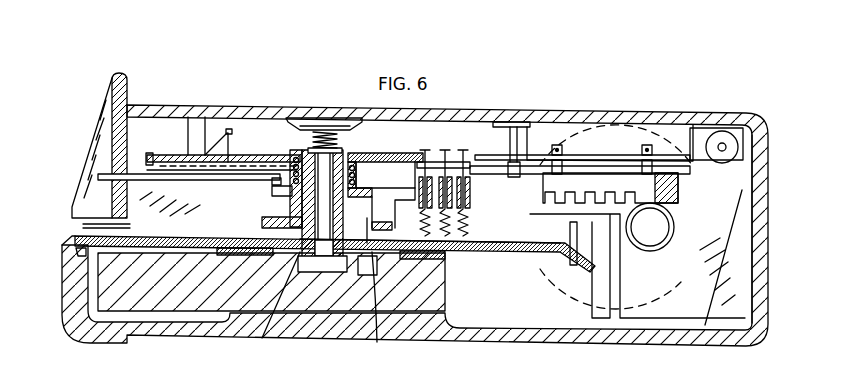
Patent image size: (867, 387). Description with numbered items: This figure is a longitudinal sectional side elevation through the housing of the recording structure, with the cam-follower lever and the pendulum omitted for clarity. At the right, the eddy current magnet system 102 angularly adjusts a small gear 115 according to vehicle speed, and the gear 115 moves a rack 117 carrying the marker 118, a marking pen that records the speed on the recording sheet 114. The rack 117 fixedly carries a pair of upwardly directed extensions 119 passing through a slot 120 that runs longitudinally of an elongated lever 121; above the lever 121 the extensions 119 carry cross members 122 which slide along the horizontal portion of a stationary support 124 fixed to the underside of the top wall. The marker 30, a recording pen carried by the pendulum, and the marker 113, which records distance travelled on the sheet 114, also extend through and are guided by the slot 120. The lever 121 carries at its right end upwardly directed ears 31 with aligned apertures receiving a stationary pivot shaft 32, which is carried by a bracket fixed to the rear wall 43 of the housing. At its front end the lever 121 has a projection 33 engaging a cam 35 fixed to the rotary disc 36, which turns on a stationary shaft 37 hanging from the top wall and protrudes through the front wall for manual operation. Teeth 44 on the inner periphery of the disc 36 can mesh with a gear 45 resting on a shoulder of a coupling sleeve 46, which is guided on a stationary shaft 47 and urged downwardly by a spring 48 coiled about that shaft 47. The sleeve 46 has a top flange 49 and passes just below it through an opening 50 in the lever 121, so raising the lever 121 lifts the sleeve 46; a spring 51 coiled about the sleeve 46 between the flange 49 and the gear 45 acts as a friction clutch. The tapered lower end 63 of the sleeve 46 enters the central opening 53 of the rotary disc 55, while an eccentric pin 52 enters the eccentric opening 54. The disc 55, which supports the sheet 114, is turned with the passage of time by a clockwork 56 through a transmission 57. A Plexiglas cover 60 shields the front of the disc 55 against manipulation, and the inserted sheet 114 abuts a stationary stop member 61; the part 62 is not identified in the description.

The marker 30 is at (463, 176).
The upwardly directed ears 31 is at (740, 158).
The pivot shaft 32 is at (722, 143).
The projection 33 is at (152, 156).
The cam 35 is at (229, 132).
The rotary disc 36 is at (100, 177).
The stationary shaft 37 is at (194, 125).
The rear wall 43 is at (764, 326).
The teeth 44 is at (290, 196).
The gear 45 is at (381, 175).
The coupling sleeve 46 is at (360, 200).
The stationary shaft 47 is at (420, 156).
The spring 48 is at (312, 133).
The flange 49 is at (330, 160).
The opening 50 is at (294, 182).
The spring 51 is at (290, 160).
The eccentric pin 52 is at (386, 228).
The central opening 53 is at (274, 305).
The eccentric opening 54 is at (373, 307).
The rotary disc 55 is at (520, 247).
The clockwork 56 is at (442, 305).
The transmission 57 is at (442, 256).
The cover 60 is at (80, 250).
The stop member 61 is at (578, 232).
The flap 62 is at (78, 207).
The tapered lower end 63 is at (340, 258).
The eddy current magnet system 102 is at (715, 276).
The marker 113 is at (444, 176).
The recording sheet 114 is at (264, 228).
The gear 115 is at (656, 232).
The rack 117 is at (676, 188).
The marker 118 is at (470, 222).
The upwardly directed extensions 119 is at (562, 233).
The slot 120 is at (490, 158).
The elongated lever 121 is at (423, 176).
The cross members 122 is at (648, 145).
The support 124 is at (603, 158).